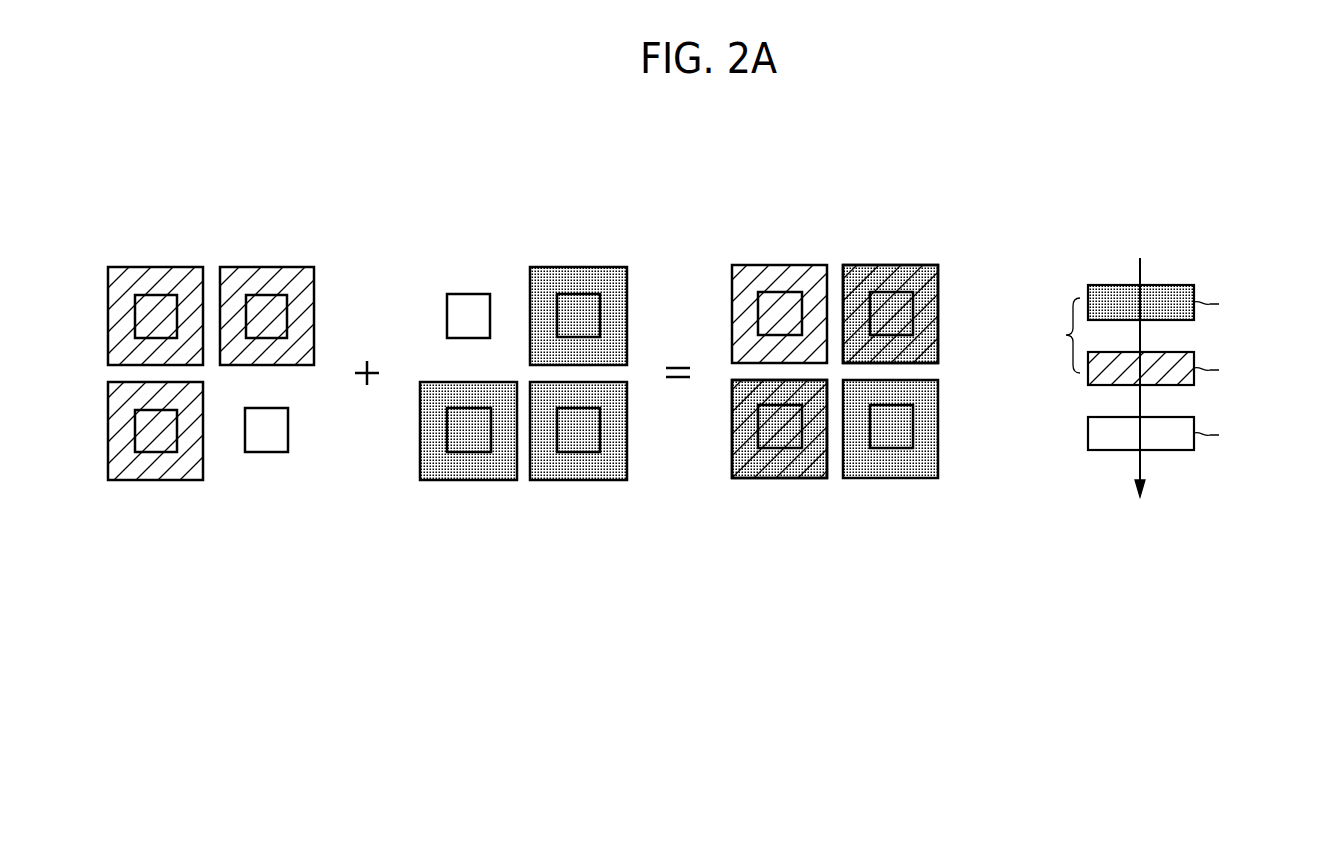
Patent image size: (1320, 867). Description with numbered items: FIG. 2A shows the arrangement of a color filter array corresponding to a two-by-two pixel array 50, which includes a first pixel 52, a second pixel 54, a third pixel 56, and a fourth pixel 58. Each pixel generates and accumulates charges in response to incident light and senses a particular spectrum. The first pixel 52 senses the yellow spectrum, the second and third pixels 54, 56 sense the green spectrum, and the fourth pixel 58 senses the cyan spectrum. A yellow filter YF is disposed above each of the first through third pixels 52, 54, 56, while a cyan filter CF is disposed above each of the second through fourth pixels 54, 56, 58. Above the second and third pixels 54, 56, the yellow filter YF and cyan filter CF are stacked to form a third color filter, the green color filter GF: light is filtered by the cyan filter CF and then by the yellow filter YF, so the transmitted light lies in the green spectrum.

The 2×2 pixel array 50 is at (975, 223).
The first pixel 52 is at (160, 295).
The second pixel 54 is at (265, 295).
The third pixel 56 is at (160, 452).
The fourth pixel 58 is at (264, 452).